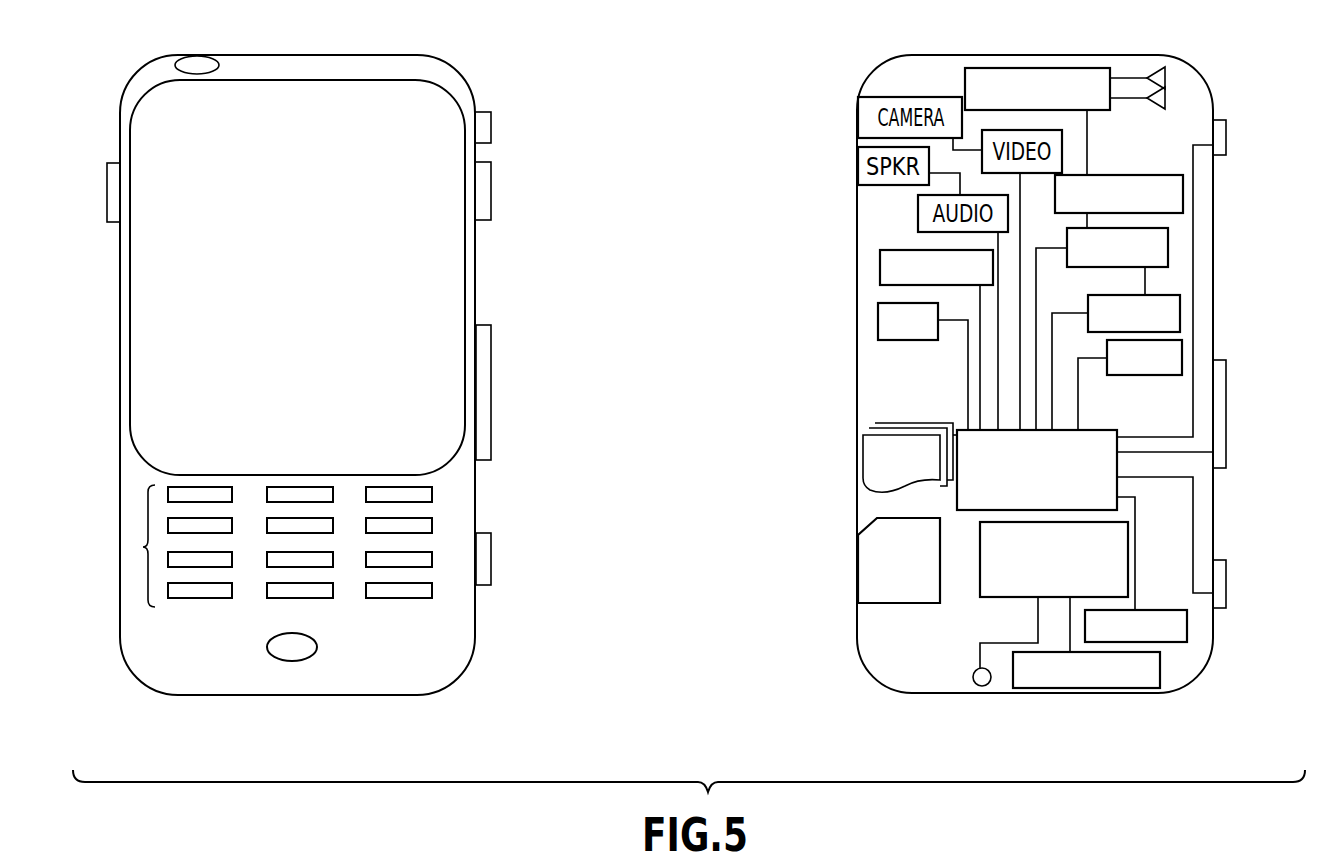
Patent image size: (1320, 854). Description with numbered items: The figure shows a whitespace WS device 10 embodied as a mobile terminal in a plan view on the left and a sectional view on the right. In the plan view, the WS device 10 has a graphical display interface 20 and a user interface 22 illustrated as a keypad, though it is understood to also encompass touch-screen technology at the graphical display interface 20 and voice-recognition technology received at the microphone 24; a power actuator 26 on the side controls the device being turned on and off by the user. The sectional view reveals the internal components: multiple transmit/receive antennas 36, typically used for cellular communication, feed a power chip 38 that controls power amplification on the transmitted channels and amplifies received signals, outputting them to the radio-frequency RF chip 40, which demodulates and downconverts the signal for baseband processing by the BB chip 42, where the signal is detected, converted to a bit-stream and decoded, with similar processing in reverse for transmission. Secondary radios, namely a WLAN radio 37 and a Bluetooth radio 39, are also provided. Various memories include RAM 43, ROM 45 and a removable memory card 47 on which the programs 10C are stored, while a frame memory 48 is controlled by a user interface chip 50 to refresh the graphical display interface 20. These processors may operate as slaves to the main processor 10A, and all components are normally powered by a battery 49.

The WS device 10 is at (512, 731).
The main processor 10A is at (963, 430).
The programs 10C is at (870, 472).
The graphical display interface 20 is at (153, 293).
The user interface 22 is at (143, 547).
The microphone 24 is at (296, 651).
The power actuator 26 is at (487, 125).
The transmit/receive antennas 36 is at (1160, 65).
The wireless local area network radio WLAN 37 is at (882, 268).
The power chip 38 is at (1030, 70).
The Bluetooth radio 39 is at (885, 320).
The radio-frequency (RF) chip 40 is at (1175, 205).
The baseband (BB) chip 42 is at (1165, 258).
The random access memory RAM 43 is at (1177, 315).
The read only memory ROM 45 is at (1177, 357).
The memory card 47 is at (870, 543).
The frame memory 48 is at (1085, 690).
The battery 49 is at (1183, 637).
The user interface chip 50 is at (1007, 587).